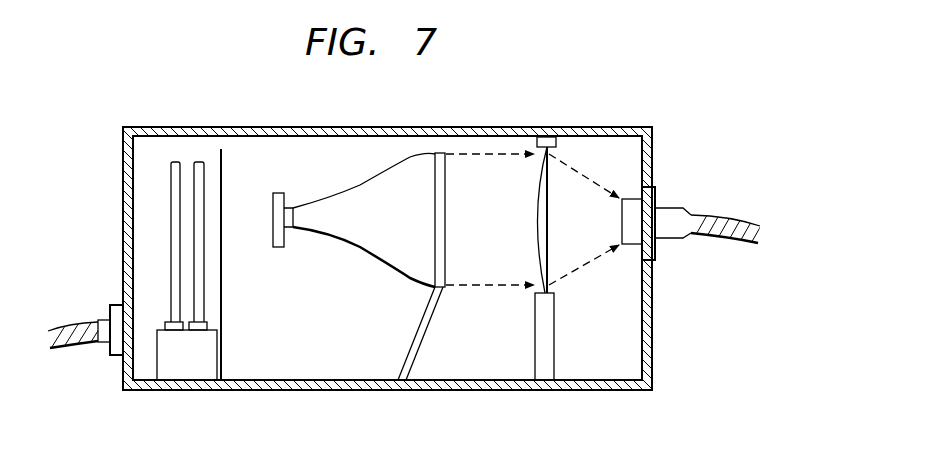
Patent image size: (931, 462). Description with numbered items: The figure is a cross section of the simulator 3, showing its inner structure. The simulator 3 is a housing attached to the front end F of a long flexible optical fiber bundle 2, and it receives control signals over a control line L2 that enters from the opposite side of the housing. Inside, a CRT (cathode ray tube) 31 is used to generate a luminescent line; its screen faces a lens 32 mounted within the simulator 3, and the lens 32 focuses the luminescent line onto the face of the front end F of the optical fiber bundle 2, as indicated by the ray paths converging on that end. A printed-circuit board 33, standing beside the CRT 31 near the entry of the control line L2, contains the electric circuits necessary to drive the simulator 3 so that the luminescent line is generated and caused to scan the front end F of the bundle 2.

The simulator 3 is at (493, 128).
The printed-circuit board 33 is at (172, 192).
The CRT (cathode ray tube) 31 is at (360, 249).
The lens 32 is at (532, 215).
The front end F is at (630, 240).
The optical fiber bundle 2 is at (730, 222).
The control line L2 is at (65, 328).